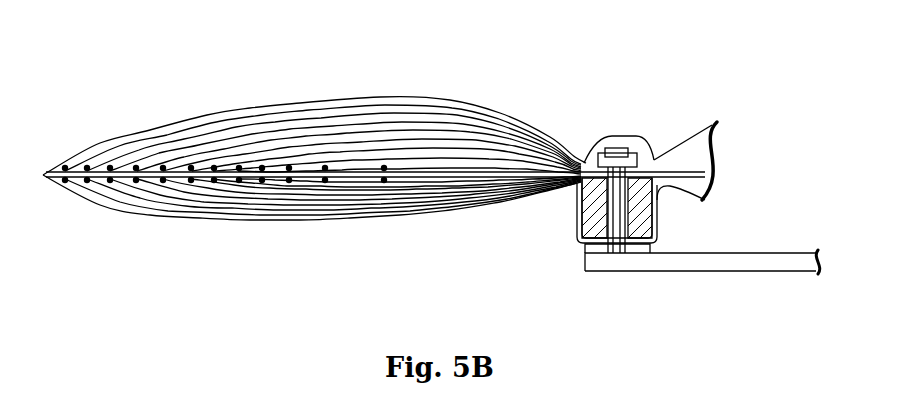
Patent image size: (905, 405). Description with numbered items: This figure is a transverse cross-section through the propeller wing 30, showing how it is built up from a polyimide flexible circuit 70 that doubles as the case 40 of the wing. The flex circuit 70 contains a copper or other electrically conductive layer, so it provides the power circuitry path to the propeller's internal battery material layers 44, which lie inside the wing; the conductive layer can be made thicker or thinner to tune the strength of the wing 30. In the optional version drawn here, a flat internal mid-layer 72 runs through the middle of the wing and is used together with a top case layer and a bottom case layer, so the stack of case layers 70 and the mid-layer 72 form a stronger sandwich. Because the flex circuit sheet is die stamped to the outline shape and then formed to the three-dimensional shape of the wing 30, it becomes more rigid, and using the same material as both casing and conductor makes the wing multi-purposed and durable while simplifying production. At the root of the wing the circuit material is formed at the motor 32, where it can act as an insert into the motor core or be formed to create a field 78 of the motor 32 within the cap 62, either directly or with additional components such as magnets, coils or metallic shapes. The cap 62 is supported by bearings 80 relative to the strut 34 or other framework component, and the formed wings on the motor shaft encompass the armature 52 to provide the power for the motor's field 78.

The propeller wing 30 is at (374, 137).
The motor 32 is at (636, 132).
The strut 34 is at (710, 258).
The case 40 is at (208, 116).
The internal battery material layers 44 is at (283, 193).
The armature 52 is at (620, 218).
The cap 62 is at (603, 136).
The polyimide flexible circuit 70 is at (314, 157).
The flat internal mid-layer 72 is at (270, 168).
The field 78 is at (588, 204).
The bearings 80 is at (600, 250).